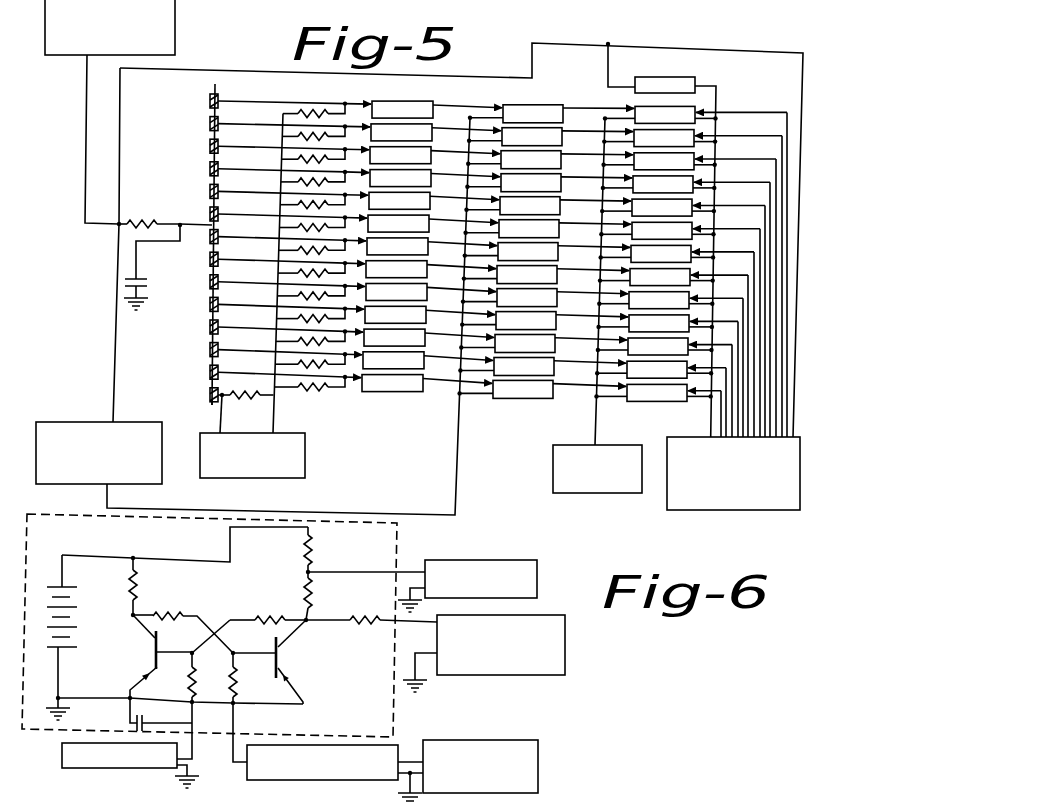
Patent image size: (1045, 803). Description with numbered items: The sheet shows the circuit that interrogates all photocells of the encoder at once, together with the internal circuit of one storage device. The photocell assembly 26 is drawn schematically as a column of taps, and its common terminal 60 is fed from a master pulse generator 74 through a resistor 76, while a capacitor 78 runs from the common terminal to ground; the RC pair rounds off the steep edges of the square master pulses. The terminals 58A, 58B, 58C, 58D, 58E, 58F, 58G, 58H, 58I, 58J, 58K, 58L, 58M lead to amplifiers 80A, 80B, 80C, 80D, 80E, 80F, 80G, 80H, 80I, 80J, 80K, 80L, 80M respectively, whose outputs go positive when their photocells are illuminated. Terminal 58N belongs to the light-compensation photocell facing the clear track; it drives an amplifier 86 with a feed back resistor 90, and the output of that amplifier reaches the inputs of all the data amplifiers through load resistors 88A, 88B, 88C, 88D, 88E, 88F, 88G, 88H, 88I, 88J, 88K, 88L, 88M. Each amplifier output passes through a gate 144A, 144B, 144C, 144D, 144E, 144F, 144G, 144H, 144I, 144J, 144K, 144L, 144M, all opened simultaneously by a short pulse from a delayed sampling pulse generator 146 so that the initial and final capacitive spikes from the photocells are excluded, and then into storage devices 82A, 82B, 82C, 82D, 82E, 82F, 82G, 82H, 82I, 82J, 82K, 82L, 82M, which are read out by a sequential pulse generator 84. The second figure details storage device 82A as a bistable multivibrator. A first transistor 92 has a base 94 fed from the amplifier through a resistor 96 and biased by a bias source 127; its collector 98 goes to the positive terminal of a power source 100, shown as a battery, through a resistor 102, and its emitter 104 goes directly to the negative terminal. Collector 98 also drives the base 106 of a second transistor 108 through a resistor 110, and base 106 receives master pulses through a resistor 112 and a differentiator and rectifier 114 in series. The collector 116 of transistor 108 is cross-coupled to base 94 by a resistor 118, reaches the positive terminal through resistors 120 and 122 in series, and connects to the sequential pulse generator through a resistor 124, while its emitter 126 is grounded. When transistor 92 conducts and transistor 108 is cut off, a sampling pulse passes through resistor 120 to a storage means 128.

In FIG. 5, the photocell assembly 26 is at (215, 82).
In FIG. 5, the terminal 58A is at (210, 101).
In FIG. 5, the terminal 58B is at (210, 124).
In FIG. 5, the terminal 58C is at (210, 146).
In FIG. 5, the terminal 58D is at (210, 169).
In FIG. 5, the terminal 58E is at (210, 191).
In FIG. 5, the terminal 58F is at (210, 214).
In FIG. 5, the terminal 58G is at (210, 237).
In FIG. 5, the terminal 58H is at (210, 259).
In FIG. 5, the terminal 58I is at (210, 282).
In FIG. 5, the terminal 58J is at (210, 304).
In FIG. 5, the terminal 58K is at (210, 327).
In FIG. 5, the terminal 58L is at (210, 350).
In FIG. 5, the terminal 58M is at (210, 372).
In FIG. 5, the terminal 58N is at (210, 395).
In FIG. 5, the common terminal 60 is at (206, 406).
In FIG. 5, the master pulse generator 74 is at (76, 55).
In FIG. 6, the master pulse generator 74 is at (527, 740).
In FIG. 5, the resistor 76 is at (140, 228).
In FIG. 5, the capacitor 78 is at (124, 283).
In FIG. 5, the amplifier 80A is at (402, 109).
In FIG. 6, the amplifier 80A is at (81, 768).
In FIG. 5, the amplifier 80B is at (401, 132).
In FIG. 5, the amplifier 80C is at (400, 155).
In FIG. 5, the amplifier 80D is at (400, 178).
In FIG. 5, the amplifier 80E is at (399, 200).
In FIG. 5, the amplifier 80F is at (398, 223).
In FIG. 5, the amplifier 80G is at (397, 246).
In FIG. 5, the amplifier 80H is at (396, 269).
In FIG. 5, the amplifier 80I is at (396, 292).
In FIG. 5, the amplifier 80J is at (395, 314).
In FIG. 5, the amplifier 80K is at (394, 337).
In FIG. 5, the amplifier 80L is at (393, 360).
In FIG. 5, the amplifier 80M is at (392, 383).
In FIG. 5, the storage device 82A is at (660, 114).
In FIG. 6, the storage device 82A is at (400, 552).
In FIG. 5, the storage device 82B is at (659, 138).
In FIG. 5, the storage device 82C is at (659, 161).
In FIG. 5, the storage device 82D is at (659, 184).
In FIG. 5, the storage device 82E is at (658, 207).
In FIG. 5, the storage device 82F is at (657, 230).
In FIG. 5, the storage device 82G is at (657, 253).
In FIG. 5, the storage device 82H is at (656, 277).
In FIG. 5, the storage device 82I is at (655, 300).
In FIG. 5, the storage device 82J is at (655, 323).
In FIG. 5, the storage device 82K is at (655, 346).
In FIG. 5, the storage device 82L is at (654, 369).
In FIG. 5, the storage device 82M is at (653, 392).
In FIG. 5, the sequential pulse generator 84 is at (703, 510).
In FIG. 6, the sequential pulse generator 84 is at (445, 675).
In FIG. 5, the amplifier 86 is at (292, 478).
In FIG. 5, the load resistor 88A is at (298, 111).
In FIG. 5, the load resistor 88B is at (298, 134).
In FIG. 5, the load resistor 88C is at (298, 156).
In FIG. 5, the load resistor 88D is at (298, 179).
In FIG. 5, the load resistor 88E is at (298, 201).
In FIG. 5, the load resistor 88F is at (298, 224).
In FIG. 5, the load resistor 88G is at (298, 247).
In FIG. 5, the load resistor 88H is at (298, 269).
In FIG. 5, the load resistor 88I is at (298, 292).
In FIG. 5, the load resistor 88J is at (298, 314).
In FIG. 5, the load resistor 88K is at (298, 337).
In FIG. 5, the load resistor 88L is at (298, 360).
In FIG. 5, the load resistor 88M is at (298, 382).
In FIG. 5, the feed back resistor 90 is at (239, 399).
In FIG. 6, the first transistor 92 is at (143, 656).
In FIG. 6, the base 94 is at (158, 664).
In FIG. 6, the resistor 96 is at (196, 668).
In FIG. 6, the collector 98 is at (146, 638).
In FIG. 6, the power source 100 is at (75, 588).
In FIG. 6, the resistor 102 is at (140, 590).
In FIG. 6, the emitter 104 is at (147, 671).
In FIG. 6, the base 106 is at (290, 662).
In FIG. 6, the second transistor 108 is at (285, 663).
In FIG. 6, the resistor 110 is at (160, 613).
In FIG. 6, the resistor 112 is at (238, 680).
In FIG. 5, the differentiator and rectifier 114 is at (675, 257).
In FIG. 6, the differentiator and rectifier 114 is at (393, 750).
In FIG. 6, the collector 116 is at (293, 640).
In FIG. 6, the resistor 118 is at (268, 609).
In FIG. 6, the resistor 120 is at (313, 598).
In FIG. 6, the resistor 122 is at (313, 560).
In FIG. 6, the resistor 124 is at (371, 610).
In FIG. 6, the emitter 126 is at (287, 673).
In FIG. 6, the bias source 127 is at (135, 719).
In FIG. 5, the storage means 128 is at (563, 493).
In FIG. 6, the storage means 128 is at (500, 560).
In FIG. 5, the gate 144A is at (515, 114).
In FIG. 5, the gate 144B is at (514, 137).
In FIG. 5, the gate 144C is at (513, 160).
In FIG. 5, the gate 144D is at (513, 183).
In FIG. 5, the gate 144E is at (512, 206).
In FIG. 5, the gate 144F is at (511, 229).
In FIG. 5, the gate 144G is at (510, 252).
In FIG. 5, the gate 144H is at (509, 275).
In FIG. 5, the gate 144I is at (509, 298).
In FIG. 5, the gate 144J is at (508, 321).
In FIG. 5, the gate 144K is at (507, 344).
In FIG. 5, the gate 144L is at (506, 367).
In FIG. 5, the gate 144M is at (505, 389).
In FIG. 5, the delayed sampling pulse generator 146 is at (60, 422).